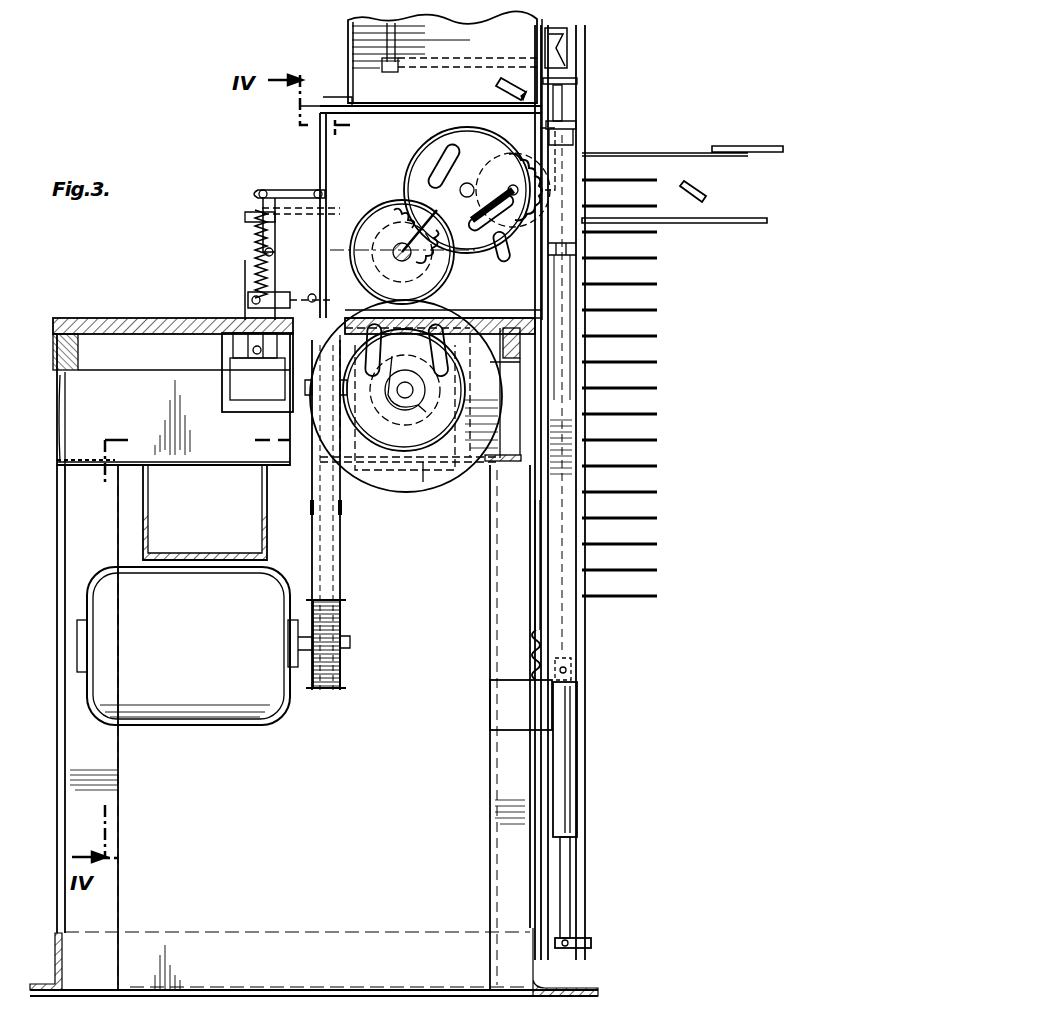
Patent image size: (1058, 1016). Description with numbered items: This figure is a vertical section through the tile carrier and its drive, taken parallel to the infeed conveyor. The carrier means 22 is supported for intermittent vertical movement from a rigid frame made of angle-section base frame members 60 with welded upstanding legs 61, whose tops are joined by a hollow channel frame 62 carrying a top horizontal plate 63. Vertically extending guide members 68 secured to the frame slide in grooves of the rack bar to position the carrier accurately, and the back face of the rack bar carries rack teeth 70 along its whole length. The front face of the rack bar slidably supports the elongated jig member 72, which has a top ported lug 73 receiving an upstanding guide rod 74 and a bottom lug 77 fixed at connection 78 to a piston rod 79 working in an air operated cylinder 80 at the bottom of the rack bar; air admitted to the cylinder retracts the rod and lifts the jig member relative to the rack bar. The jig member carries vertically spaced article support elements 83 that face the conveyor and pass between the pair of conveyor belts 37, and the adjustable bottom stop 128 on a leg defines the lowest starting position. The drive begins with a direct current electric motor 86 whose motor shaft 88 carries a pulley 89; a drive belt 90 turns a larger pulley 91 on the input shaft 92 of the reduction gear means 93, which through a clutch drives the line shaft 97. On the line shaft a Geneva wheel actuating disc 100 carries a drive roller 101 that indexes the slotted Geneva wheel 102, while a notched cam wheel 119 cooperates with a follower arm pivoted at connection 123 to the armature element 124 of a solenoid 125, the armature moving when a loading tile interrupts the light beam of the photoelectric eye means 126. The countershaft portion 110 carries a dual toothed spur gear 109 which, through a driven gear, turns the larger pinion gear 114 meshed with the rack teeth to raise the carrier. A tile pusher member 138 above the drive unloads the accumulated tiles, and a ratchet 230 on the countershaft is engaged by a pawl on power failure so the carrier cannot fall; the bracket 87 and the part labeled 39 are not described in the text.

The carrier means 22 is at (676, 482).
The conveyor belts 37 is at (725, 223).
The ratchet gear 39 is at (497, 166).
The base frame members 60 is at (55, 980).
The legs 61 is at (123, 811).
The frame 62 is at (57, 412).
The top horizontal plate 63 is at (135, 318).
The guide members 68 is at (574, 83).
The rack teeth 70 is at (532, 645).
The jig member 72 is at (590, 815).
The top ported lug 73 is at (565, 125).
The guide rod 74 is at (562, 100).
The bottom lug 77 is at (585, 948).
The fixed connection 78 is at (563, 948).
The piston rod 79 is at (570, 890).
The air operated cylinder 80 is at (565, 745).
The article support elements 83 is at (635, 153).
The electric motor 86 is at (205, 727).
The motor bracket 87 is at (152, 542).
The motor shaft 88 is at (350, 641).
The pulley 89 is at (342, 610).
The drive belt 90 is at (338, 538).
The pulley 91 is at (340, 502).
The input shaft 92 is at (310, 426).
The reduction gear means 93 is at (428, 485).
The line shaft 97 is at (392, 366).
The Geneva wheel actuating disc 100 is at (443, 470).
The drive roller 101 is at (455, 377).
The Geneva wheel 102 is at (335, 185).
The dual toothed spur gear 109 is at (400, 236).
The countershaft portion 110 is at (432, 212).
The pinion gear 114 is at (468, 128).
The cam wheel 119 is at (390, 485).
The pivotal connection 123 is at (245, 290).
The armature element 124 is at (247, 302).
The solenoid 125 is at (243, 262).
The photoelectric eye means 126 is at (706, 193).
The adjustable bottom stop 128 is at (508, 700).
The tile pusher member 138 is at (560, 30).
The ratchet 230 is at (255, 235).